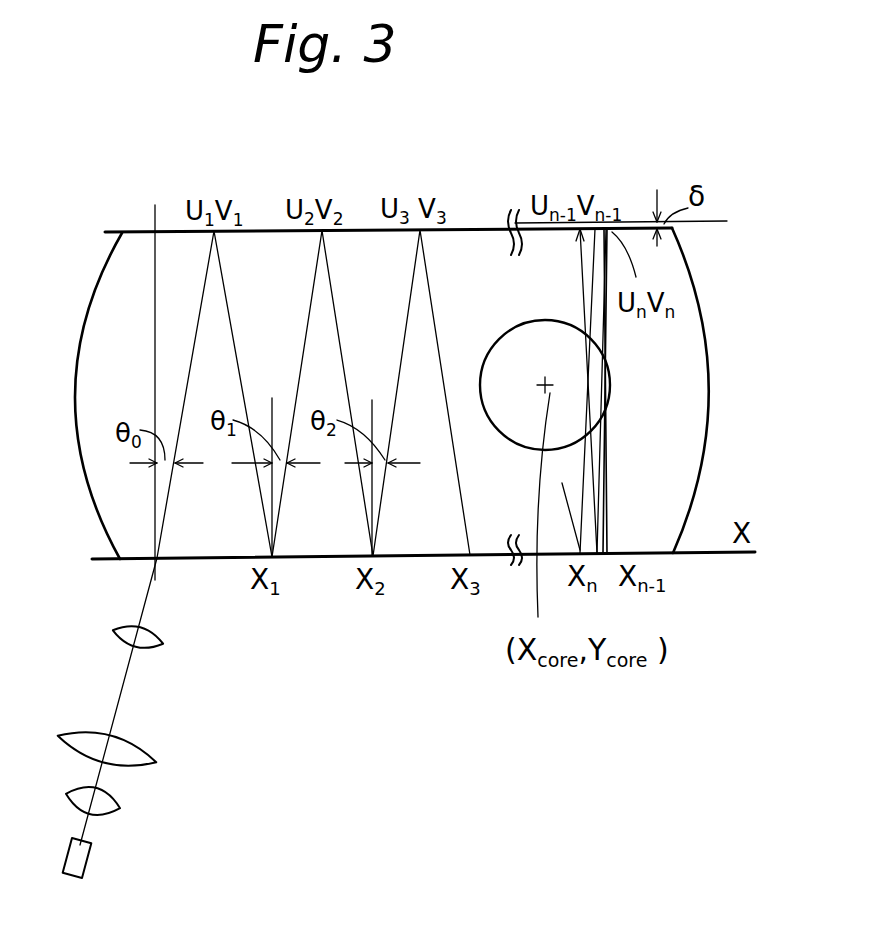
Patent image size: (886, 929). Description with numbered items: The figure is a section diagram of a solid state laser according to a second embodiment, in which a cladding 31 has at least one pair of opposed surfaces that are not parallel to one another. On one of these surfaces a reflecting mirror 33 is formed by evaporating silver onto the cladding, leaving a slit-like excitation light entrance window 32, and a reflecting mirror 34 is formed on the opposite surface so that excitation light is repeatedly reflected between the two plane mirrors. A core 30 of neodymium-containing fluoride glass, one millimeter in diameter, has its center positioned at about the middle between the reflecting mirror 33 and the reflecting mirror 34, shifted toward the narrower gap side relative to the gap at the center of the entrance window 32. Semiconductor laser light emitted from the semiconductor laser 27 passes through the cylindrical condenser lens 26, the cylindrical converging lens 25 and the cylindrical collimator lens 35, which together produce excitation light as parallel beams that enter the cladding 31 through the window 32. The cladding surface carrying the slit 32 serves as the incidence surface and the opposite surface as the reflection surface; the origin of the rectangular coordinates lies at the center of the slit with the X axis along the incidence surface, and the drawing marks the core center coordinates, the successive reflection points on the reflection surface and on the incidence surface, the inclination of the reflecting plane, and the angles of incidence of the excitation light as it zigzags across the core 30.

The cylindrical converging lens 25 is at (150, 761).
The cylindrical condenser lens 26 is at (115, 809).
The semiconductor laser 27 is at (88, 867).
The core 30 is at (612, 385).
The cladding 31 is at (735, 371).
The slit-like excitation light entrance window 32 is at (163, 562).
The reflecting mirror 33 is at (330, 560).
The reflecting mirror 34 is at (470, 230).
The cylindrical collimator lens 35 is at (152, 643).